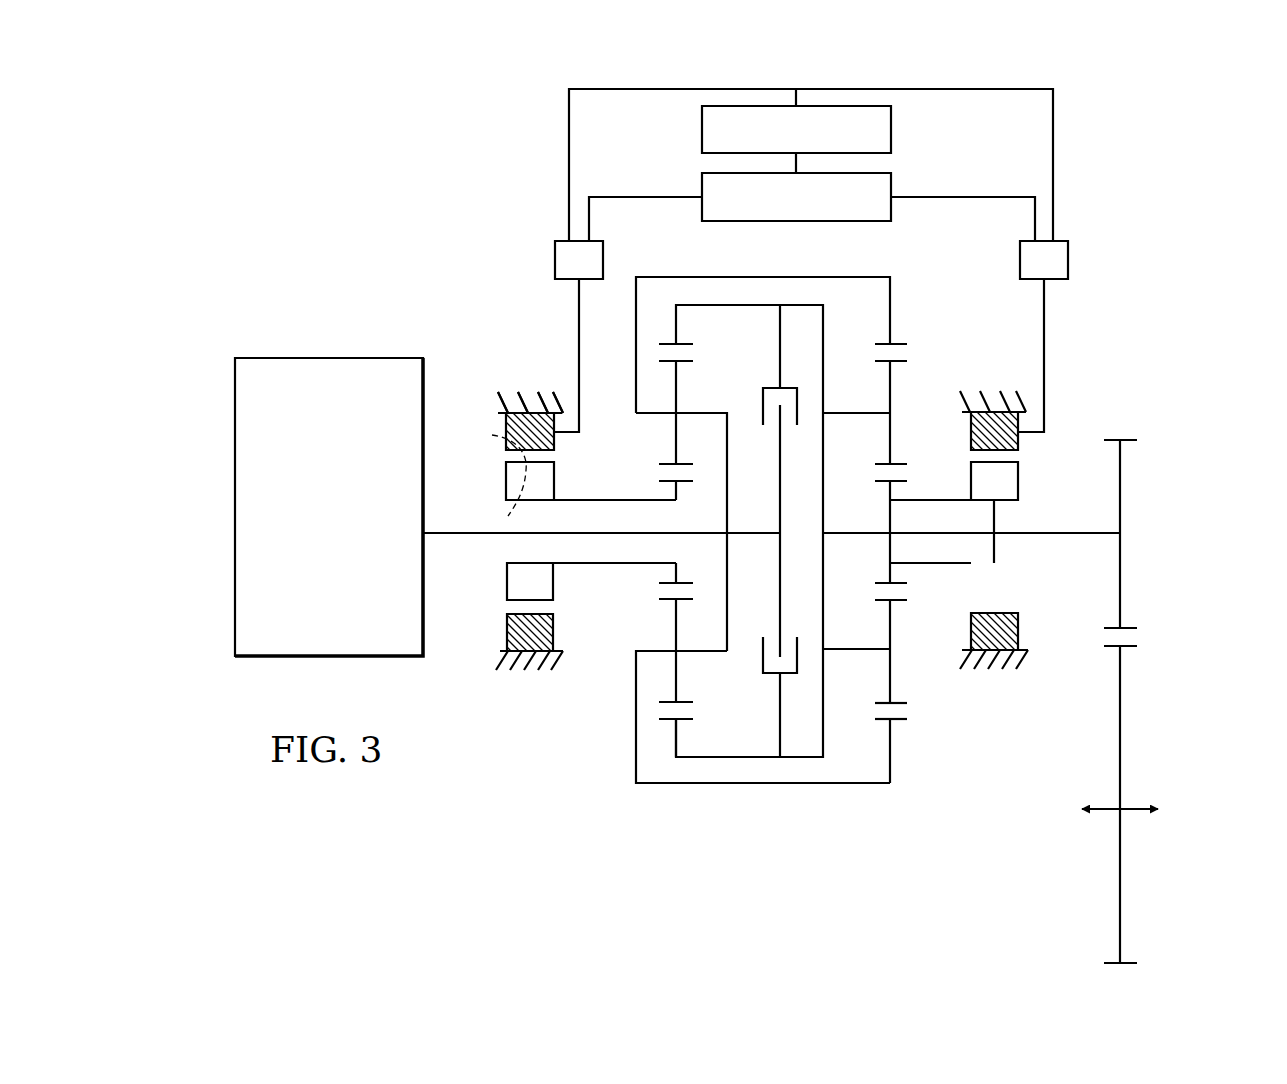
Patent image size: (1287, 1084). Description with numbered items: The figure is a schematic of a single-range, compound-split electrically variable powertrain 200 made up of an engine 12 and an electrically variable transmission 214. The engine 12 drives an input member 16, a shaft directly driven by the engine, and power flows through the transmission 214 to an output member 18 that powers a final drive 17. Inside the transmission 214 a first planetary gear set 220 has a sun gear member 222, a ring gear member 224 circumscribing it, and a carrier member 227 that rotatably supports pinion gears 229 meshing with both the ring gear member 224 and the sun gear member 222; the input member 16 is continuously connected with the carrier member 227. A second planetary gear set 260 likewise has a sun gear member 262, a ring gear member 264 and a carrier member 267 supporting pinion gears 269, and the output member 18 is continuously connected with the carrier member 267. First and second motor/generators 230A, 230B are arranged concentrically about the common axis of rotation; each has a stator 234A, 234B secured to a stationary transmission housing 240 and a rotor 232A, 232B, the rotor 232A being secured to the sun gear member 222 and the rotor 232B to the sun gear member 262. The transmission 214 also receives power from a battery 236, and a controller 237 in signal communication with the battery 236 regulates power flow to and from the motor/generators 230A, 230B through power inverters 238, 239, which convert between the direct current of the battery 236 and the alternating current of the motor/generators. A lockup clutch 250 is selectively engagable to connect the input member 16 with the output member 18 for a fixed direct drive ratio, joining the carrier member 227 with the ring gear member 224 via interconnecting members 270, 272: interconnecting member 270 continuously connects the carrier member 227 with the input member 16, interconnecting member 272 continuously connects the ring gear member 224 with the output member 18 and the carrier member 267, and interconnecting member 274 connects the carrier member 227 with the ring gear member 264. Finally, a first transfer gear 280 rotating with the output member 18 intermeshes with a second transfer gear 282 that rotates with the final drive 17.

The engine 12 is at (233, 472).
The input member 16 is at (468, 535).
The final drive 17 is at (1136, 812).
The output member 18 is at (1073, 535).
The powertrain 200 is at (1169, 311).
The electrically variable transmission 214 is at (758, 266).
The first planetary gear set 220 is at (660, 733).
The sun gear member 222 is at (663, 582).
The ring gear member 224 is at (681, 721).
The carrier member 227 is at (657, 650).
The pinion gears 229 is at (672, 678).
The first motor/generator 230A is at (560, 448).
The second motor/generator 230B is at (1002, 461).
The rotor 232A is at (505, 485).
The rotor 232B is at (970, 486).
The stator 234A is at (503, 430).
The stator 234B is at (968, 428).
The battery 236 is at (891, 133).
The controller 237 is at (891, 201).
The power inverter 238 is at (553, 259).
The power inverter 239 is at (1069, 259).
The transmission housing 240 is at (523, 405).
The lockup clutch 250 is at (792, 686).
The second planetary gear set 260 is at (902, 327).
The sun gear member 262 is at (882, 583).
The ring gear member 264 is at (897, 722).
The carrier member 267 is at (846, 651).
The pinion gears 269 is at (891, 677).
The interconnecting member 270 is at (727, 490).
The interconnecting member 272 is at (703, 305).
The interconnecting member 274 is at (656, 277).
The first transfer gear 280 is at (1121, 504).
The second transfer gear 282 is at (1121, 720).